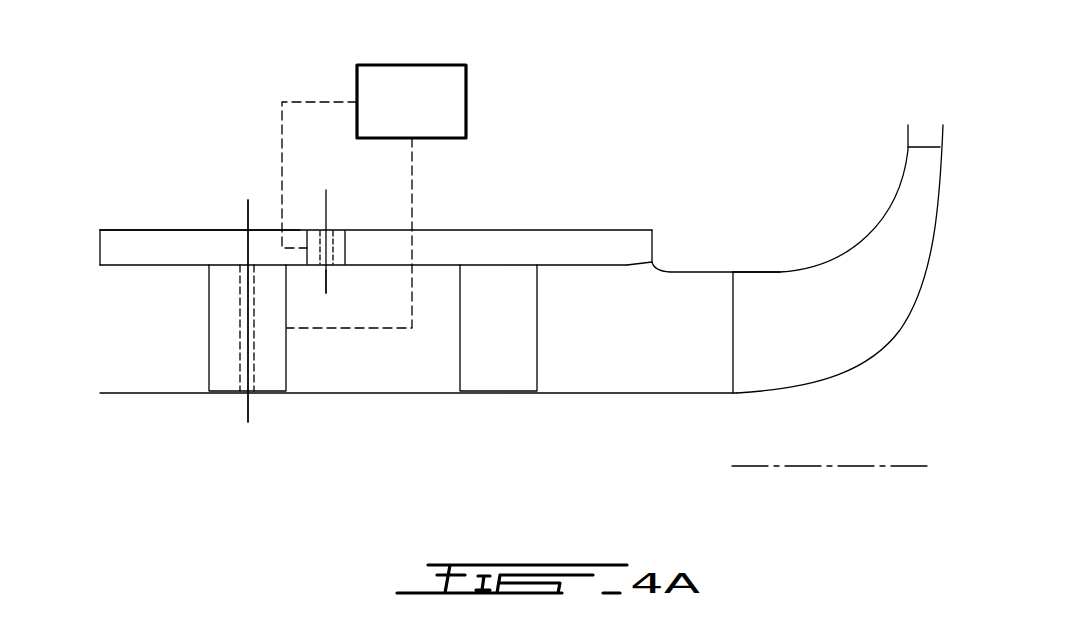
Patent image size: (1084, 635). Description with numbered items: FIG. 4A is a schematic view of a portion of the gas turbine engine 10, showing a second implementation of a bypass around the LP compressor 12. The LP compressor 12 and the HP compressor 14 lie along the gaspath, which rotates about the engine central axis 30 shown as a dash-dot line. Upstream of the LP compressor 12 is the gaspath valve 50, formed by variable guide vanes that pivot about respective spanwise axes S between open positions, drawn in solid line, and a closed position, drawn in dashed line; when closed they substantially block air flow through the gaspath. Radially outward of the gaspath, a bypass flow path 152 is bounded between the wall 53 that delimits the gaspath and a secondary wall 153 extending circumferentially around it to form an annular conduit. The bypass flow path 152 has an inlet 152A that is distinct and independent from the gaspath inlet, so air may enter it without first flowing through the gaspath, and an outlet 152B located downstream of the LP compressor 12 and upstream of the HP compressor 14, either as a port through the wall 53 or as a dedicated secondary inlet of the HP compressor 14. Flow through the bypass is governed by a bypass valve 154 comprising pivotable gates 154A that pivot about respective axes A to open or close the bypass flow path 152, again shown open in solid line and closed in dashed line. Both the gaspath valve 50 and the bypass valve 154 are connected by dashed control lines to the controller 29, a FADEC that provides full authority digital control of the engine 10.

The gas turbine engine 10 is at (803, 182).
The LP compressor 12 is at (457, 356).
The HP compressor 14 is at (785, 332).
The controller 29 is at (412, 65).
The engine central axis 30 is at (832, 468).
The gaspath valve 50 is at (237, 348).
The wall 53 is at (156, 265).
The bypass flow path 152 is at (573, 248).
The inlet 152A is at (100, 245).
The outlet 152B is at (638, 268).
The secondary wall 153 is at (222, 230).
The bypass valve 154 is at (345, 244).
The pivotable gates 154A is at (313, 240).
The axes A is at (328, 280).
The spanwise axes S is at (247, 297).